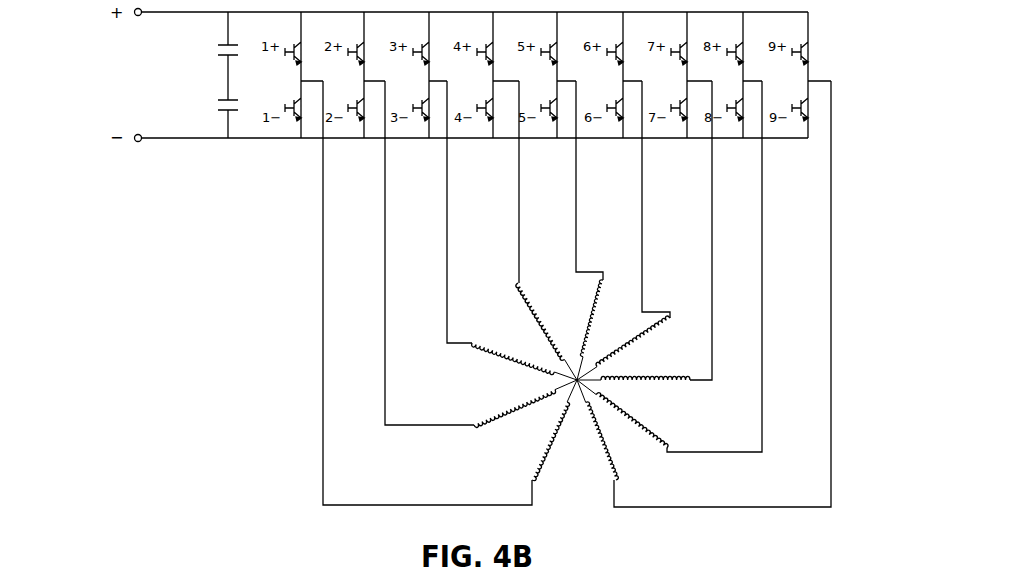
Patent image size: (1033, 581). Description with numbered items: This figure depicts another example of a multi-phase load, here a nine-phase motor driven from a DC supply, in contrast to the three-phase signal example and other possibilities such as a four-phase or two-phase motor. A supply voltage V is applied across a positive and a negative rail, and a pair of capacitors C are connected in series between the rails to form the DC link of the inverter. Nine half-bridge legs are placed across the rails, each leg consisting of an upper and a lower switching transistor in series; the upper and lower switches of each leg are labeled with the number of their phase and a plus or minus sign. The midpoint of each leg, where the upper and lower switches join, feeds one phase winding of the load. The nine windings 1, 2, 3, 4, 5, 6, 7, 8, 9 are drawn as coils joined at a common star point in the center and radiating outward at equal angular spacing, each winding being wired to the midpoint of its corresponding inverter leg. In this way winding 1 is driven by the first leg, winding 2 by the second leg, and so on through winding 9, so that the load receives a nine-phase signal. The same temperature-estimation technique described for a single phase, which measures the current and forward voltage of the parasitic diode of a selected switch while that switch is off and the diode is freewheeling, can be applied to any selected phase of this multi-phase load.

The first phase winding 1 is at (446, 293).
The second phase winding 2 is at (470, 254).
The third phase winding 3 is at (500, 228).
The fourth phase winding 4 is at (533, 221).
The fifth phase winding 5 is at (589, 219).
The sixth phase winding 6 is at (632, 224).
The seventh phase winding 7 is at (656, 230).
The eighth phase winding 8 is at (679, 266).
The ninth phase winding 9 is at (708, 294).
The capacitor C is at (217, 75).
The DC supply voltage V is at (129, 75).